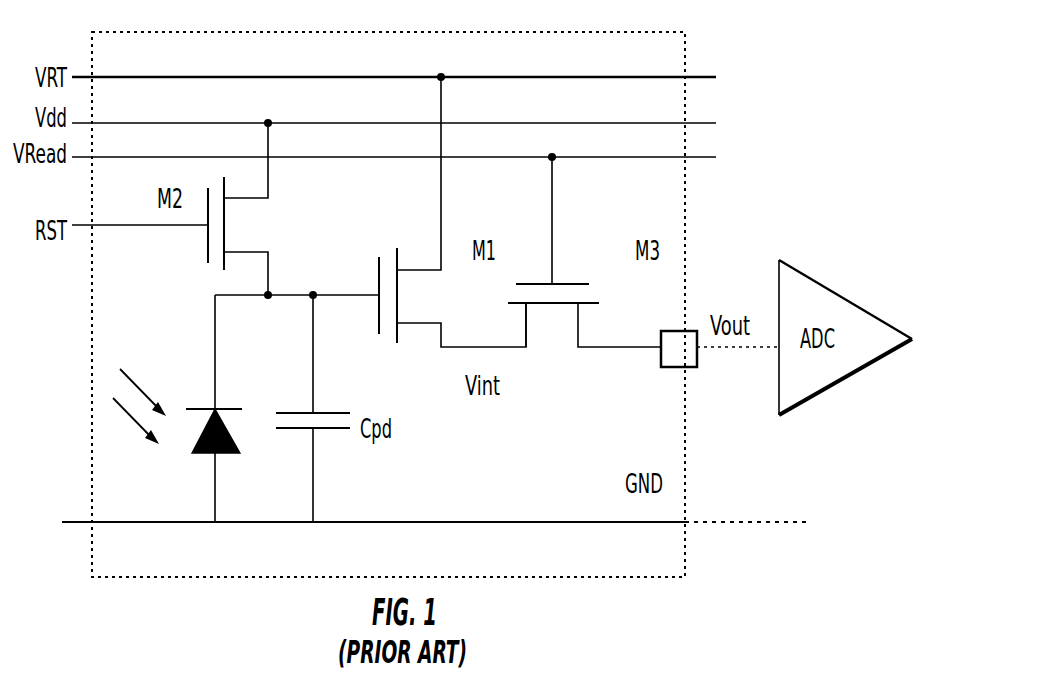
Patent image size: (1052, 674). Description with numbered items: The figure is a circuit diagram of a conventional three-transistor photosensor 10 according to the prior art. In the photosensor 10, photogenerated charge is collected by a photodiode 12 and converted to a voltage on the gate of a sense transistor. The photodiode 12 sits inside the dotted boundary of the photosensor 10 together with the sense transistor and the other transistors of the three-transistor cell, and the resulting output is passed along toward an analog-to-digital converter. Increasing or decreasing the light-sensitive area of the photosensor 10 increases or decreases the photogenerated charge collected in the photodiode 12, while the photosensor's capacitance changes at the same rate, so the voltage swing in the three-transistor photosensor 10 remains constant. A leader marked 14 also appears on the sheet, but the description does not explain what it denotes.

The 3T photosensor 10 is at (697, 13).
The photodiode 12 is at (177, 408).
The pixel readout output 14 is at (807, 673).